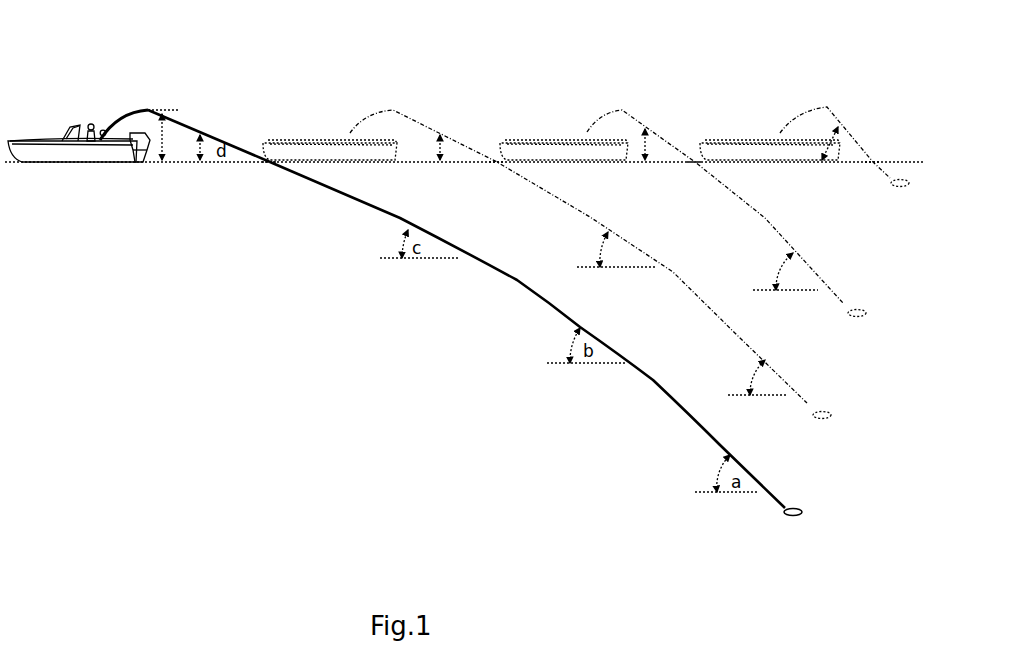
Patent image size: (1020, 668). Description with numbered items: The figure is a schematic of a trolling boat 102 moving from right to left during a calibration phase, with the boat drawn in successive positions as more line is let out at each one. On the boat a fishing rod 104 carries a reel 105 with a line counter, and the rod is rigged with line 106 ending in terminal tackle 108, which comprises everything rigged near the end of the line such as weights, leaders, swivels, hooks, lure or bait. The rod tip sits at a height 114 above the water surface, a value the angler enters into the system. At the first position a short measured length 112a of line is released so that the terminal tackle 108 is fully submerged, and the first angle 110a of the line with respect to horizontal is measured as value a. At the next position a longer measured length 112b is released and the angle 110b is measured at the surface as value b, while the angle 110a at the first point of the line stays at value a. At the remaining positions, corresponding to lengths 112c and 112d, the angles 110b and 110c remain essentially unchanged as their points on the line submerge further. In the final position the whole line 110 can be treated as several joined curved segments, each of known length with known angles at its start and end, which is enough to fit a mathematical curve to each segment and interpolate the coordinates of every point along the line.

The trolling boat 102 is at (47, 135).
The fishing rod 104 is at (124, 115).
The reel 105 is at (103, 129).
The line 106 is at (190, 126).
The terminal tackle 108 is at (807, 515).
The line 110 is at (233, 145).
The first angle 110a is at (857, 142).
The angle 110b is at (668, 135).
The angle 110c is at (457, 142).
The measured length of line 112a is at (885, 180).
The measured length of line 112b is at (710, 185).
The measured length of line 112c is at (510, 180).
The measured length of line 112d is at (285, 182).
The height 114 is at (170, 108).